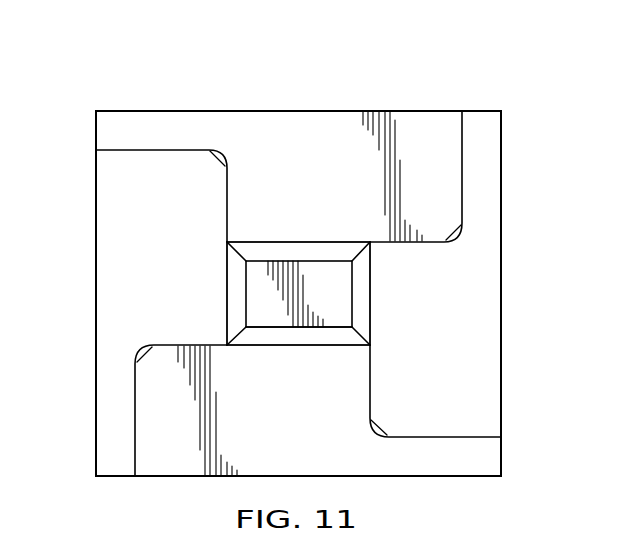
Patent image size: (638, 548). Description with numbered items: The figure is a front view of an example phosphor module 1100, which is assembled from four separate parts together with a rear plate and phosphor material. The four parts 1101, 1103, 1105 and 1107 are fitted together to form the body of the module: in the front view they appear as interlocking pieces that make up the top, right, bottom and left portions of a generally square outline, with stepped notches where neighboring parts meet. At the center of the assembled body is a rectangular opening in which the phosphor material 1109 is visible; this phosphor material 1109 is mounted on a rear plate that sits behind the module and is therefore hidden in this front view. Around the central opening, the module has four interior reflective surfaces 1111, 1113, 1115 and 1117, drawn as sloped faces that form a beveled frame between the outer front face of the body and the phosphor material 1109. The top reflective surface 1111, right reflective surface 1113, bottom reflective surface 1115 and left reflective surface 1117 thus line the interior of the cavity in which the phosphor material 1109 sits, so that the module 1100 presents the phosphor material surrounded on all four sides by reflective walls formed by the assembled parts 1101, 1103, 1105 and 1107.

The module 1100 is at (186, 64).
The part 1101 is at (280, 111).
The part 1103 is at (493, 313).
The part 1105 is at (177, 467).
The part 1107 is at (105, 312).
The phosphor material 1109 is at (323, 270).
The interior reflective surface 1111 is at (277, 250).
The interior reflective surface 1113 is at (361, 296).
The interior reflective surface 1115 is at (298, 338).
The interior reflective surface 1117 is at (237, 293).